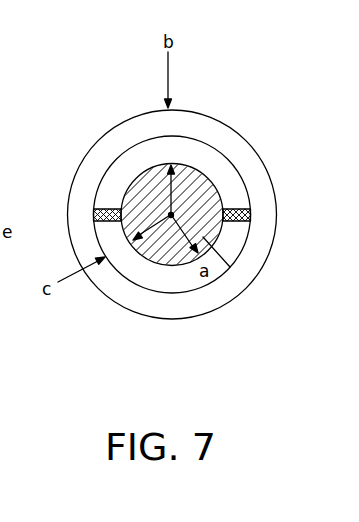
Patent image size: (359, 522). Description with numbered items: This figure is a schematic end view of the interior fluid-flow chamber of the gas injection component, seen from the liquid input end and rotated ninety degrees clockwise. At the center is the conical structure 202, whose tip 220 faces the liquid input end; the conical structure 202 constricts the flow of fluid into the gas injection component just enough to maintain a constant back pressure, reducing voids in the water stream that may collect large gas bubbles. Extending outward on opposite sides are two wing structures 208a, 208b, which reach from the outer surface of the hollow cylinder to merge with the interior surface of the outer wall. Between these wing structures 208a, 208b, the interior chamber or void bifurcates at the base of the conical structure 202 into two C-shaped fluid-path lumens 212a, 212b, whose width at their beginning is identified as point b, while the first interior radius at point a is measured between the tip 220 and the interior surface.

The conical structure 202 is at (243, 258).
The wing structure 208a is at (109, 208).
The wing structure 208b is at (244, 221).
The C-shaped fluid-path lumen 212a is at (125, 163).
The C-shaped fluid-path lumen 212b is at (142, 268).
The tip 220 is at (173, 215).